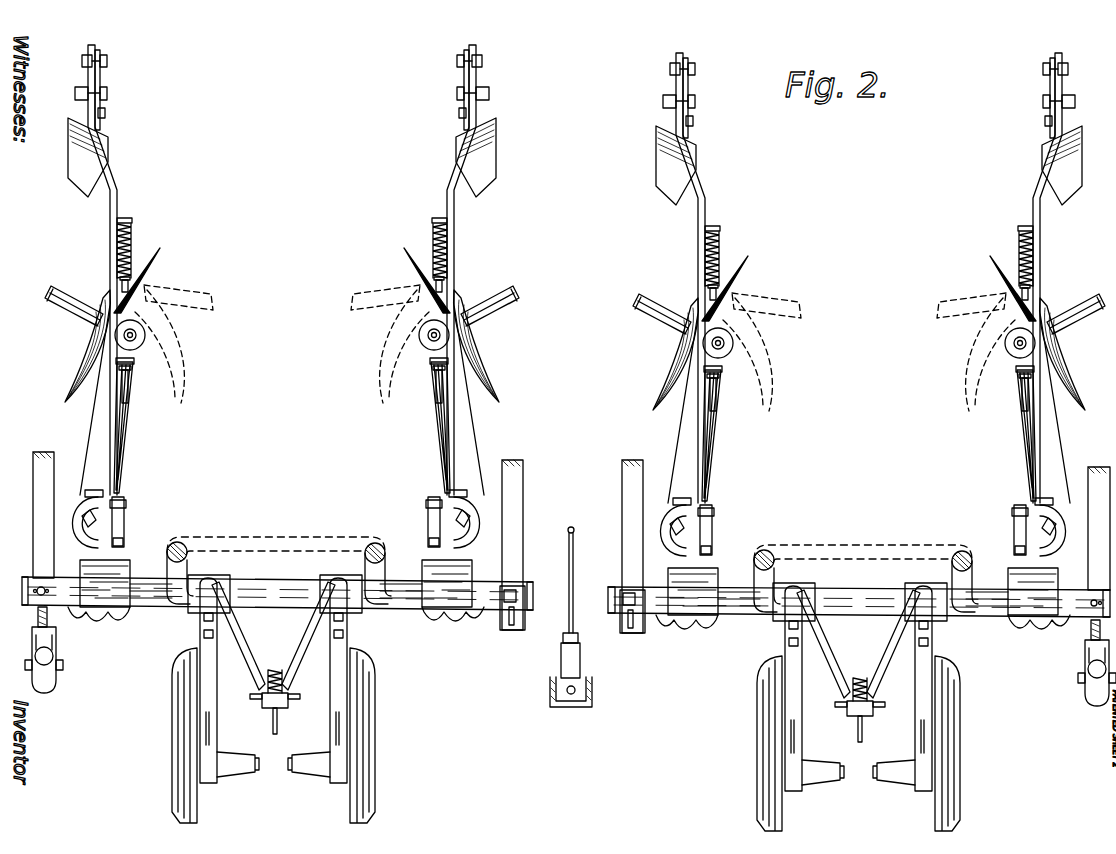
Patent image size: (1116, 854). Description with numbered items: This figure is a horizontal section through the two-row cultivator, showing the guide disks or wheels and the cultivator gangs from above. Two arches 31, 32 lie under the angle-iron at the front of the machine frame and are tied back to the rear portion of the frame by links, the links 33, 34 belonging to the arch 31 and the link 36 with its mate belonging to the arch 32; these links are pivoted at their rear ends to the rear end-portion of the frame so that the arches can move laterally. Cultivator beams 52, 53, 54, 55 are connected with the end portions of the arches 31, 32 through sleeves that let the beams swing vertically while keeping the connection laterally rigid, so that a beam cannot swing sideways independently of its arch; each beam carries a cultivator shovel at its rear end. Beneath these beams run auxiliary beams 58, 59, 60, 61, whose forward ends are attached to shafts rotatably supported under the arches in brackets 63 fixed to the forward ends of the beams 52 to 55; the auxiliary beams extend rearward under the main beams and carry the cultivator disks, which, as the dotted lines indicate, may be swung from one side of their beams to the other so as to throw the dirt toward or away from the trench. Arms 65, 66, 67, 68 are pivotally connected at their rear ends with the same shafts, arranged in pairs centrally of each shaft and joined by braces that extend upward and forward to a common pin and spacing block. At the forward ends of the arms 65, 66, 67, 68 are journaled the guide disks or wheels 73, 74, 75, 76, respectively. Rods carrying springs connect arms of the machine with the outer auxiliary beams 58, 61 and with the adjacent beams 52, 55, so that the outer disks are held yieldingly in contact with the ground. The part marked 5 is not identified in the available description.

The frame bar 5 is at (33, 497).
The arch 31 is at (873, 547).
The arch 32 is at (283, 540).
The link 33 is at (1097, 480).
The link 34 is at (622, 514).
The link 36 is at (522, 513).
The cultivator beam 52 is at (1028, 457).
The cultivator beam 53 is at (700, 470).
The cultivator beam 54 is at (447, 437).
The cultivator beam 55 is at (112, 472).
The auxiliary beam 58 is at (1017, 448).
The auxiliary beam 59 is at (690, 445).
The auxiliary beam 60 is at (433, 445).
The auxiliary beam 61 is at (127, 425).
The bracket 63 is at (115, 560).
The arm 65 is at (918, 703).
The arm 66 is at (788, 680).
The arm 67 is at (333, 692).
The arm 68 is at (205, 682).
The guide disk or wheel 73 is at (950, 770).
The guide disk or wheel 74 is at (767, 753).
The guide disk or wheel 75 is at (378, 745).
The guide disk or wheel 76 is at (180, 747).